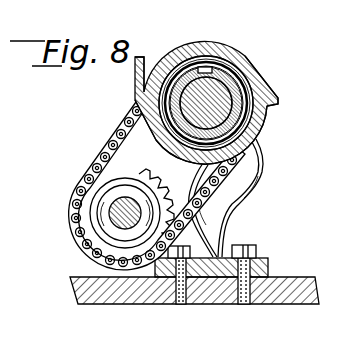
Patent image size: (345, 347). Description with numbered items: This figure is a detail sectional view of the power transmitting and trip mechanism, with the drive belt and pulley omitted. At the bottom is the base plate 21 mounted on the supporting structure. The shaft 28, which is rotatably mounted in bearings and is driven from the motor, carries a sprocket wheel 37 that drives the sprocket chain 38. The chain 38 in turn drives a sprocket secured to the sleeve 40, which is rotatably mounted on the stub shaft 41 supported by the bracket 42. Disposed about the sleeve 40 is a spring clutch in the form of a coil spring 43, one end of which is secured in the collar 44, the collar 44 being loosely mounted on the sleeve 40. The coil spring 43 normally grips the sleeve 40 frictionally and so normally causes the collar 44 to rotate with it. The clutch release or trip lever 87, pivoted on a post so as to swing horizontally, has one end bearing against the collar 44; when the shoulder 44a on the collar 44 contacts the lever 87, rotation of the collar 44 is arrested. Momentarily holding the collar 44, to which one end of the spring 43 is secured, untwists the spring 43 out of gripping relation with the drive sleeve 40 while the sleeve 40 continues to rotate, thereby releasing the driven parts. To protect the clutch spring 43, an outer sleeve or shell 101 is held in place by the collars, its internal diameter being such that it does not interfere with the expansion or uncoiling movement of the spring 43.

The base plate 21 is at (300, 305).
The shaft 28 is at (117, 223).
The sprocket wheel 37 is at (90, 206).
The sprocket chain 38 is at (97, 158).
The sleeve 40 is at (196, 77).
The stub shaft 41 is at (262, 123).
The bracket 42 is at (264, 176).
The coil spring 43 is at (230, 73).
The collar 44 is at (238, 57).
The shoulder 44a is at (279, 100).
The clutch release or trip lever 87 is at (134, 78).
The outer sleeve or shell 101 is at (247, 82).